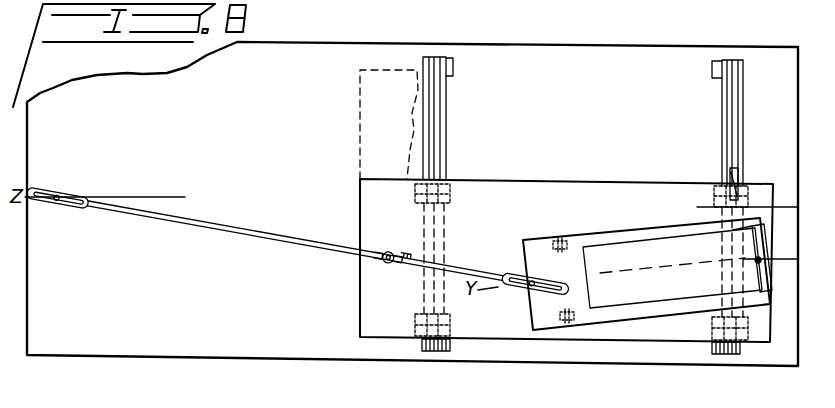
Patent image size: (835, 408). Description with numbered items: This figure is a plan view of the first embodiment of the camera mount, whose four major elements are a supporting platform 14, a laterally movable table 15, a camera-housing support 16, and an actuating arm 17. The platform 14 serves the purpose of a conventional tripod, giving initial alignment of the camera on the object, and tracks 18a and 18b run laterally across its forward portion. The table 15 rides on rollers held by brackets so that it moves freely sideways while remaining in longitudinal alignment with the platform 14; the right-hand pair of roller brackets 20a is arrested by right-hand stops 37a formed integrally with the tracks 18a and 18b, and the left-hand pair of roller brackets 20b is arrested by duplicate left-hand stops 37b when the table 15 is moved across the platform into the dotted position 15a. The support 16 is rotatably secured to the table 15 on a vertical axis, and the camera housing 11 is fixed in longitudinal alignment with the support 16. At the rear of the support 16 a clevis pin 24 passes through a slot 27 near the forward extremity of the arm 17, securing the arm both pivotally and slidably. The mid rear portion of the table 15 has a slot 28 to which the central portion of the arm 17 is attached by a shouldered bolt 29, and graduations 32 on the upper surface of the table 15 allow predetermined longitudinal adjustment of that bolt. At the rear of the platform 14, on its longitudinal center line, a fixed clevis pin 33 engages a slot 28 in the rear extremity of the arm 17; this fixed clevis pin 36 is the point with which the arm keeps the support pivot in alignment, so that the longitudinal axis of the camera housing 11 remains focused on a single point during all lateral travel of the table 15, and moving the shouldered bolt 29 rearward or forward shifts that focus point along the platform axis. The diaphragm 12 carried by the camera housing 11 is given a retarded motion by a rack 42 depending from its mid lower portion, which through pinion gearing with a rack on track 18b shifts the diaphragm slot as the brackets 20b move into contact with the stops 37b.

The camera housing 11 is at (658, 278).
The diaphragm 12 is at (738, 172).
The supporting platform 14 is at (538, 363).
The laterally movable table 15 is at (593, 344).
The extreme left-hand position of table 15a is at (358, 113).
The camera-housing support 16 is at (628, 320).
The actuating arm 17 is at (292, 259).
The track 18a is at (446, 128).
The track 18b is at (722, 114).
The right-hand roller brackets 20a is at (452, 315).
The left-hand roller brackets 20b is at (452, 197).
The clevis pin 24 is at (550, 273).
The slot 27 is at (525, 263).
The slot 28 is at (376, 276).
The shouldered bolt 29 is at (404, 279).
The graduations 32 is at (392, 234).
The clevis pin 33 is at (78, 186).
The fixed clevis pins 36 is at (62, 173).
The right-hand stops 37a is at (452, 352).
The left-hand stops 37b is at (453, 67).
The rack 42 is at (760, 215).